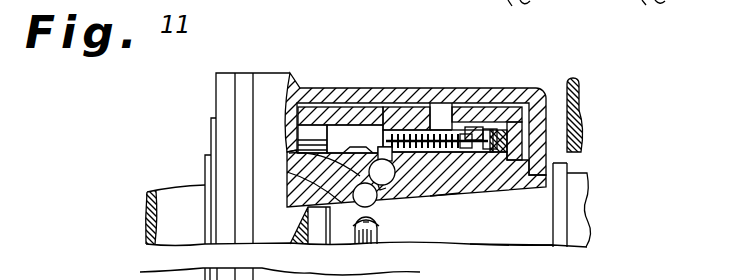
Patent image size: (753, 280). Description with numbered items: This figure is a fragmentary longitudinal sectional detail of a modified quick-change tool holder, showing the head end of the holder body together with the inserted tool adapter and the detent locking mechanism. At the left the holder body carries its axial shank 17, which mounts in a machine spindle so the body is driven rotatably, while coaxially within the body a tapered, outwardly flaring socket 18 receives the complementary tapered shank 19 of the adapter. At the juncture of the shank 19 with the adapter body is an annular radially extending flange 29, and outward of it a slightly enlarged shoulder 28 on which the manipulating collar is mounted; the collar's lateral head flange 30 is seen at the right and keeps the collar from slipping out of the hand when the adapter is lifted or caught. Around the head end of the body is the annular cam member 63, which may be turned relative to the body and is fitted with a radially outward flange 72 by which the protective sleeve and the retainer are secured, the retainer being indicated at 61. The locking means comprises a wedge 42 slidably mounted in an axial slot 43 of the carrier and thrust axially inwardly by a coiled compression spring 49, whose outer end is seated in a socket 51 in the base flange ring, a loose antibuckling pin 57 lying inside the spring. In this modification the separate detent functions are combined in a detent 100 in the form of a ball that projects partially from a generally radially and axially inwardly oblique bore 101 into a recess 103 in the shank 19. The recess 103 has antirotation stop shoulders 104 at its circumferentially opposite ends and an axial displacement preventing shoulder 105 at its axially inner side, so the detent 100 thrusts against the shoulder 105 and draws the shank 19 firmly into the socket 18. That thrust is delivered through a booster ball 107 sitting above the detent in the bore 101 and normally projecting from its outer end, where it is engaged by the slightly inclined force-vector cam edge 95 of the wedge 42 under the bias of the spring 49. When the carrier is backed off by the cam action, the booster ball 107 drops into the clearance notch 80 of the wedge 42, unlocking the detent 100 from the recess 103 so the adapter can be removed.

The axial shank portion 17 is at (170, 198).
The socket 18 is at (497, 195).
The tapered shank portion 19 is at (498, 228).
The shoulder 28 is at (573, 227).
The annular radially extending flange 29 is at (560, 210).
The lateral annular head flange 30 is at (575, 117).
The wedge 42 is at (365, 130).
The axial slot 43 is at (314, 130).
The coiled compression spring 49 is at (443, 140).
The socket 51 is at (490, 123).
The antibuckling pin 57 is at (440, 190).
The flange 61 is at (227, 75).
The annular cam member 63 is at (288, 130).
The annular flange 72 is at (244, 84).
The release notch 80 is at (292, 178).
The cam surface 95 is at (393, 196).
The detent 100 is at (373, 210).
The oblique bore 101 is at (292, 190).
The recess 103 is at (365, 236).
The antirotation stop shoulder 104 is at (368, 226).
The axial displacement preventing shoulder 105 is at (366, 236).
The booster ball 107 is at (381, 165).